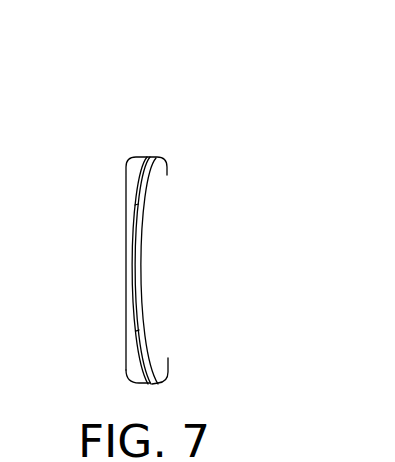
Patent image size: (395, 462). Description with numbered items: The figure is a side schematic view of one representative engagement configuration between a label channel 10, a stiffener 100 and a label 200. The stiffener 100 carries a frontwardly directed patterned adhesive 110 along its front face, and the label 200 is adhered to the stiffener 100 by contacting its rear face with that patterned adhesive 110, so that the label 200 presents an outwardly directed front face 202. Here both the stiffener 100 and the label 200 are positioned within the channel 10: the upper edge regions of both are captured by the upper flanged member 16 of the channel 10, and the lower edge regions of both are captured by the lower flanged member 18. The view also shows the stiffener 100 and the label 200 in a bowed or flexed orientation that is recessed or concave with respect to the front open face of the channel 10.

The label channel 10 is at (136, 155).
The upper flanged member 16 is at (157, 161).
The lower flanged member 18 is at (151, 386).
The stiffener 100 is at (151, 156).
The patterned adhesive 110 is at (133, 254).
The label 200 is at (147, 193).
The front face 202 is at (137, 267).